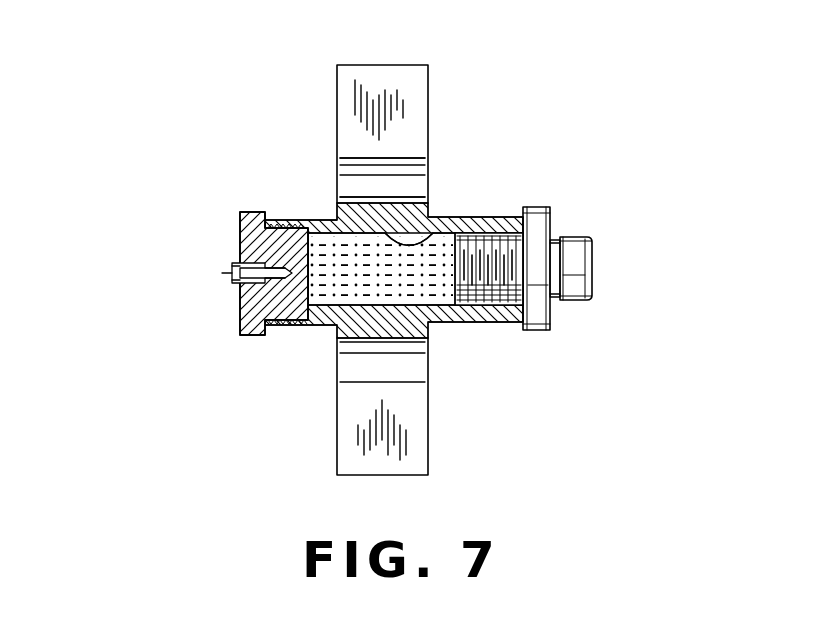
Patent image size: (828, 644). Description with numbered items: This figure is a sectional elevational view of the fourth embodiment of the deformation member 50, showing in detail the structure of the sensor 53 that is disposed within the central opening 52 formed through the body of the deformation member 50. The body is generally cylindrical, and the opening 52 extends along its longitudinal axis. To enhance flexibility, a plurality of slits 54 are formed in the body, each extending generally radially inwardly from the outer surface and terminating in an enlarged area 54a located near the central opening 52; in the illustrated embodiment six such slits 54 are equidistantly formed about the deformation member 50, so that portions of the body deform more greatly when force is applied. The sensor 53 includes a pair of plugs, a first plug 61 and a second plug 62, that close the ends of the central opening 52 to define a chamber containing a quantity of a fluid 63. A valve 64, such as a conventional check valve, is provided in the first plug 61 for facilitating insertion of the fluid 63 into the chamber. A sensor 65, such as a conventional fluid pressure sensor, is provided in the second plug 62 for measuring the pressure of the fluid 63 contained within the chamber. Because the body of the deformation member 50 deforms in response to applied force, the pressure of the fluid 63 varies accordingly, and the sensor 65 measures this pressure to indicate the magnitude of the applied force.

The deformation member 50 is at (389, 246).
The opening 52 is at (433, 240).
The sensor 53 is at (232, 188).
The slits 54 is at (342, 81).
The enlarged area 54a is at (343, 182).
The first plug 61 is at (285, 305).
The second plug 62 is at (492, 312).
The fluid 63 is at (355, 293).
The valve 64 is at (232, 268).
The sensor 65 is at (573, 255).